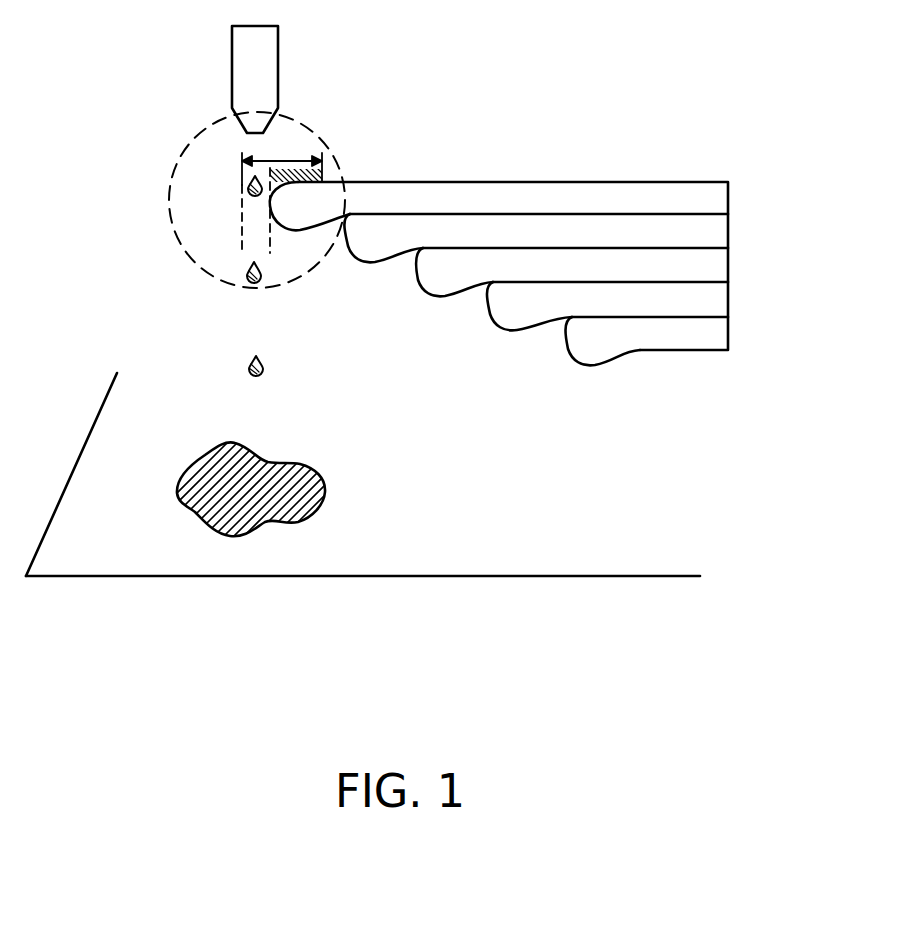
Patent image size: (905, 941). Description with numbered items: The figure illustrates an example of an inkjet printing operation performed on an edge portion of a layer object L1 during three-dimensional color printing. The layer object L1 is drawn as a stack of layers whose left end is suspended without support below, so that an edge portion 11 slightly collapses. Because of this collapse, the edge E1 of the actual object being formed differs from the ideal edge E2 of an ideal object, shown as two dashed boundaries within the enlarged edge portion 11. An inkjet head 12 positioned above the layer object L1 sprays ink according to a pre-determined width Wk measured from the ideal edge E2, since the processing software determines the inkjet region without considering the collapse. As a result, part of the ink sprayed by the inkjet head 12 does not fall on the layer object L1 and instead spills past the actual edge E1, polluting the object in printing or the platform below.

The inkjet head 12 is at (278, 45).
The edge portion 11 is at (328, 143).
The layer object L1 is at (670, 182).
The edge of the actual object E1 is at (262, 235).
The ideal edge E2 is at (242, 226).
The pre-determined width Wk is at (282, 157).